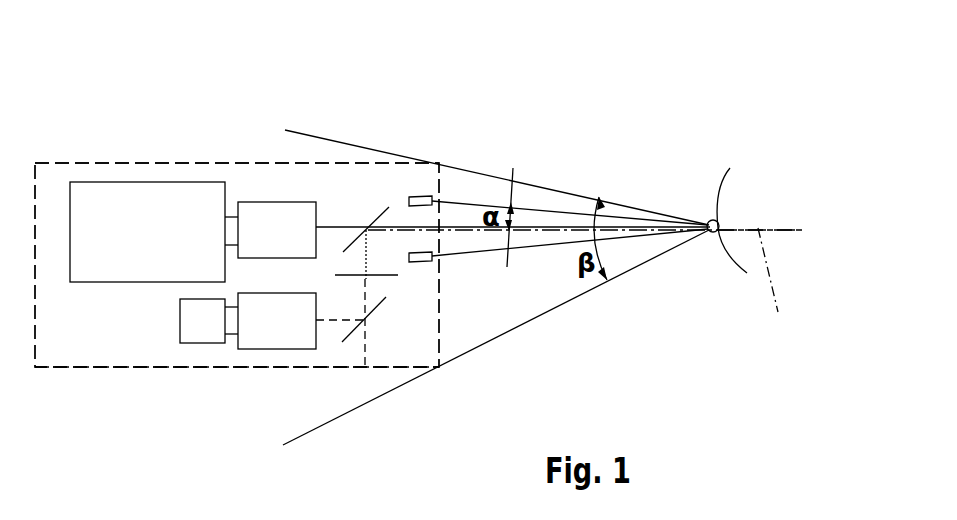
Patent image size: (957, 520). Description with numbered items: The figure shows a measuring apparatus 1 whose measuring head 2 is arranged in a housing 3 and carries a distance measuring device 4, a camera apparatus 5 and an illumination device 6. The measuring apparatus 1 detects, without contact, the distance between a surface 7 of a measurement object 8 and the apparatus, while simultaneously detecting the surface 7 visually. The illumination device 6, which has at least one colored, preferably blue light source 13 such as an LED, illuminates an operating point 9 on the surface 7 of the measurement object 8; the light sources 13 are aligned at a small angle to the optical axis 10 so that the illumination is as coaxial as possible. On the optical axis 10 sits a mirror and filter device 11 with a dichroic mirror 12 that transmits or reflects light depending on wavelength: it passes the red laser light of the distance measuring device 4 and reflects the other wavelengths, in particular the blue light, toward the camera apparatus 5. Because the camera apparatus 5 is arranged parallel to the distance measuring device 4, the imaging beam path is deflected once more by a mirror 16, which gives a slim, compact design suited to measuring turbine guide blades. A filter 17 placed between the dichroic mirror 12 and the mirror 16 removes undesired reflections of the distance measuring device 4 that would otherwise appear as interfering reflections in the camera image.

The measuring apparatus 1 is at (88, 124).
The measuring head 2 is at (254, 152).
The housing 3 is at (106, 368).
The distance measuring device 4 is at (138, 199).
The camera apparatus 5 is at (203, 334).
The illumination device 6 is at (416, 184).
The surface 7 is at (722, 178).
The measurement object 8 is at (750, 212).
The operating point 9 is at (717, 236).
The optical axis 10 is at (777, 285).
The mirror and filter device 11 is at (361, 216).
The dichroic mirror 12 is at (378, 211).
The light source 13 is at (425, 198).
The mirror 16 is at (354, 330).
The filter 17 is at (393, 278).